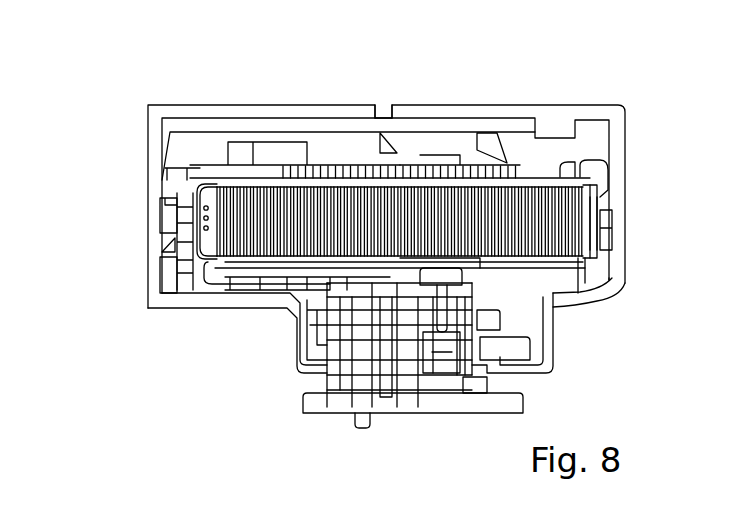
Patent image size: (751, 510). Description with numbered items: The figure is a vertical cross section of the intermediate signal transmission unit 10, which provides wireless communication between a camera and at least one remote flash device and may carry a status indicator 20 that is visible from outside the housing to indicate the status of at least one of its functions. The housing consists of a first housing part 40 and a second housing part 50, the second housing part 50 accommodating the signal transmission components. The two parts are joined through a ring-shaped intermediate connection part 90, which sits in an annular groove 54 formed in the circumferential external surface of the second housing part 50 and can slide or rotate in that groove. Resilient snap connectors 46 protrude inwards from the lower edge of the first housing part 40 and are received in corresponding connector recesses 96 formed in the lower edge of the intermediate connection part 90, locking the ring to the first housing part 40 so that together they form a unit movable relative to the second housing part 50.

The intermediate signal transmission unit 10 is at (151, 67).
The status indicator 20 is at (387, 97).
The first housing part 40 is at (628, 132).
The resilient protruding snap connector 46 is at (160, 242).
The second housing part 50 is at (608, 294).
The annular groove 54 is at (600, 207).
The intermediate connection part 90 is at (170, 222).
The connector recess 96 is at (170, 240).